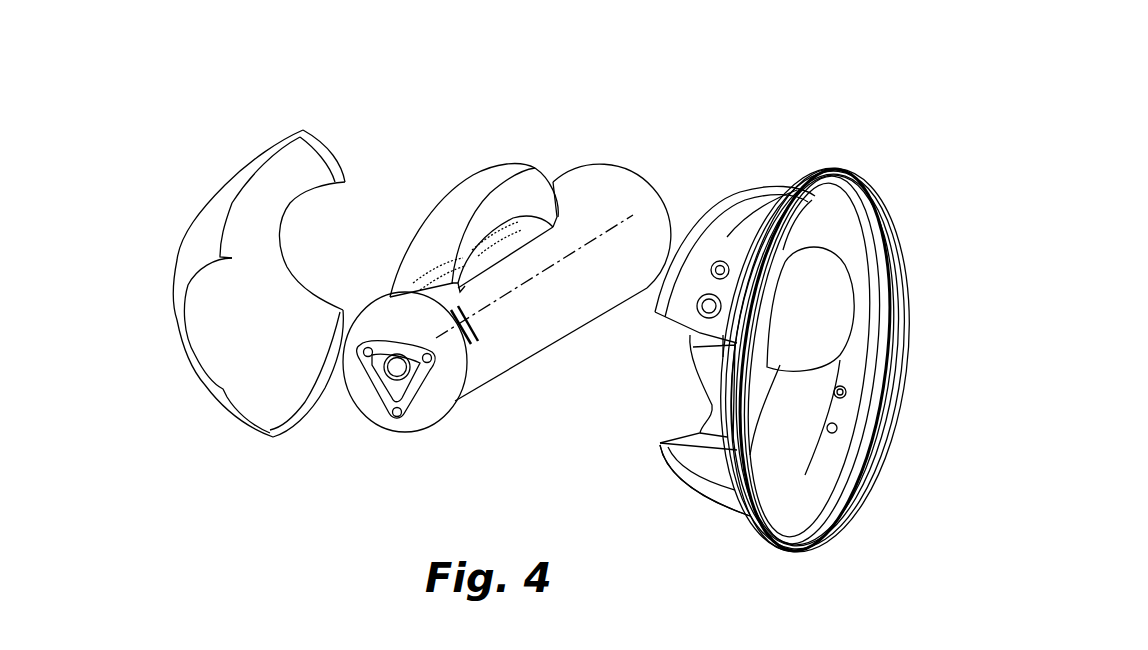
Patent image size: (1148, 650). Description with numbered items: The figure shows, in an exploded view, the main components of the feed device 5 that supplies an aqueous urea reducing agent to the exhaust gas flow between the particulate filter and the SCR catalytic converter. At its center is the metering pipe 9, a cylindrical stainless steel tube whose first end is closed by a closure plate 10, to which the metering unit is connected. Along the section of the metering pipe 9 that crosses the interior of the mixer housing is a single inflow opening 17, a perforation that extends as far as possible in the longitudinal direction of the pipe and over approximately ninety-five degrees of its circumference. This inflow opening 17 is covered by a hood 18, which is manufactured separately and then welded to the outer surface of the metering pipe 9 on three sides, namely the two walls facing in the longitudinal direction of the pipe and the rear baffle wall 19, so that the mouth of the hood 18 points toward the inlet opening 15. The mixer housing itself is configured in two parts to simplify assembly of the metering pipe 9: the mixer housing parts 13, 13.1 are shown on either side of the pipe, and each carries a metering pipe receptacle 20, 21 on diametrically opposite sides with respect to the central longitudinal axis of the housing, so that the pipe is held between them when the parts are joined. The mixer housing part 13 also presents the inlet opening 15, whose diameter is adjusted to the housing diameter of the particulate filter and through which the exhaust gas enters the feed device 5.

The feed device 5 is at (402, 105).
The metering pipe 9 is at (590, 185).
The closure plate 10 is at (370, 393).
The mixer housing part 13 is at (767, 192).
The mixer housing part 13.1 is at (220, 183).
The inlet opening 15 is at (898, 291).
The inflow opening 17 is at (511, 243).
The hood 18 is at (466, 192).
The baffle wall 19 is at (389, 260).
The metering pipe receptacle 20 is at (338, 258).
The metering pipe receptacle 21 is at (829, 312).